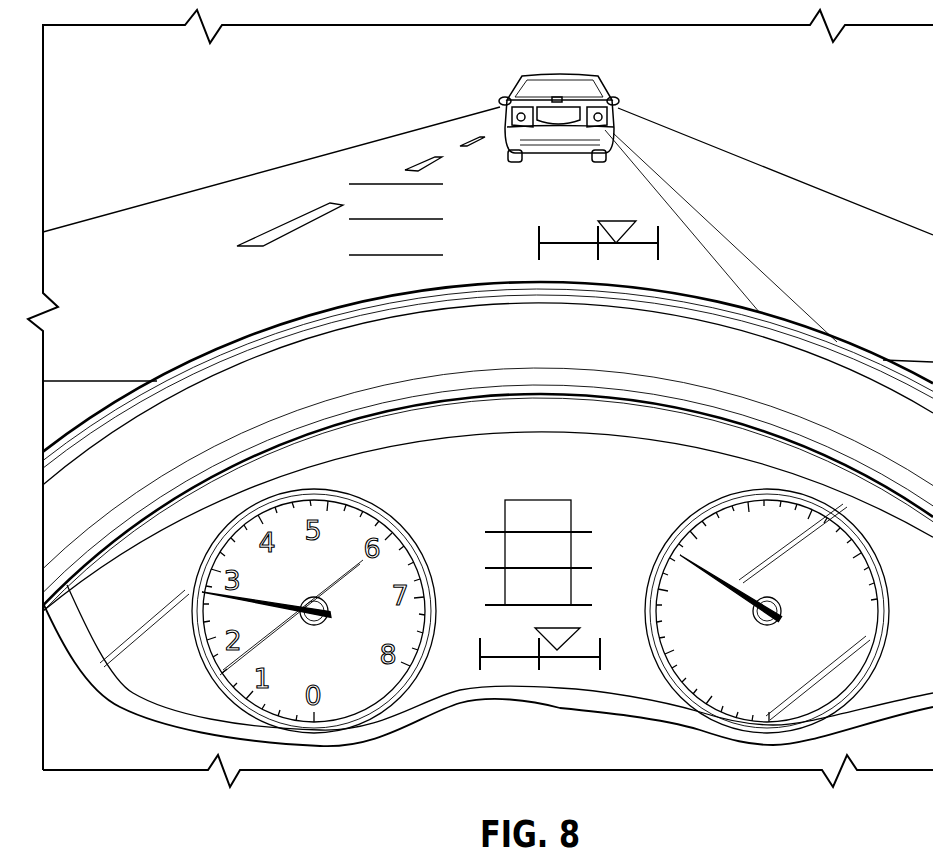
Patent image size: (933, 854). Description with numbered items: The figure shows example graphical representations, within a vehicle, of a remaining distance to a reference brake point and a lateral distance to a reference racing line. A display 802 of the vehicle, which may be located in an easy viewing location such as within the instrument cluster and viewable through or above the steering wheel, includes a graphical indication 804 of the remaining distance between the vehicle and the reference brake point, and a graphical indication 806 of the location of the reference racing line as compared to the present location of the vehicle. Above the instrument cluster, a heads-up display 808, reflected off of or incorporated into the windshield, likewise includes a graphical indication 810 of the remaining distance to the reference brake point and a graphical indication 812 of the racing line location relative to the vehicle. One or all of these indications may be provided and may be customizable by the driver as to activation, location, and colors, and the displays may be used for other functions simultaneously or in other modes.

The display 802 is at (630, 508).
The graphical indication 804 is at (540, 503).
The graphical indication 806 is at (525, 668).
The heads-up display 808 is at (277, 275).
The graphical indication 810 is at (320, 197).
The graphical indication 812 is at (640, 217).